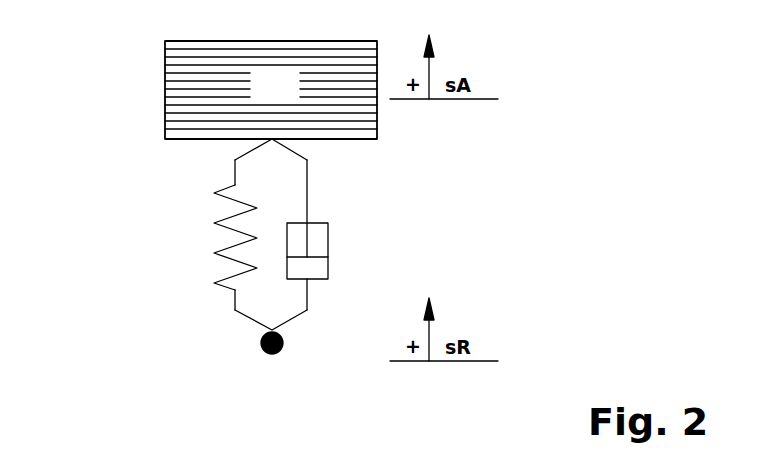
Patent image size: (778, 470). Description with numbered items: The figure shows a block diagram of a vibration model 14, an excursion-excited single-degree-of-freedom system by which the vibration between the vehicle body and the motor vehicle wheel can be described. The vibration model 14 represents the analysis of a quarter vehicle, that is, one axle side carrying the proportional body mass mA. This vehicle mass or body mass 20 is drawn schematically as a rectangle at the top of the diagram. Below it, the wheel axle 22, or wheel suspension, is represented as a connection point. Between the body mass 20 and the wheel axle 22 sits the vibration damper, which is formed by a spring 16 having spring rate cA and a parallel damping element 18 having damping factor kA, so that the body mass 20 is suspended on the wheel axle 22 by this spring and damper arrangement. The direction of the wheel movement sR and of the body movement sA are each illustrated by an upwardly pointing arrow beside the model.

The vibration model 14 is at (145, 207).
The spring 16 is at (218, 285).
The damping element 18 is at (318, 280).
The body mass 20 is at (377, 126).
The wheel axle 22 is at (262, 352).